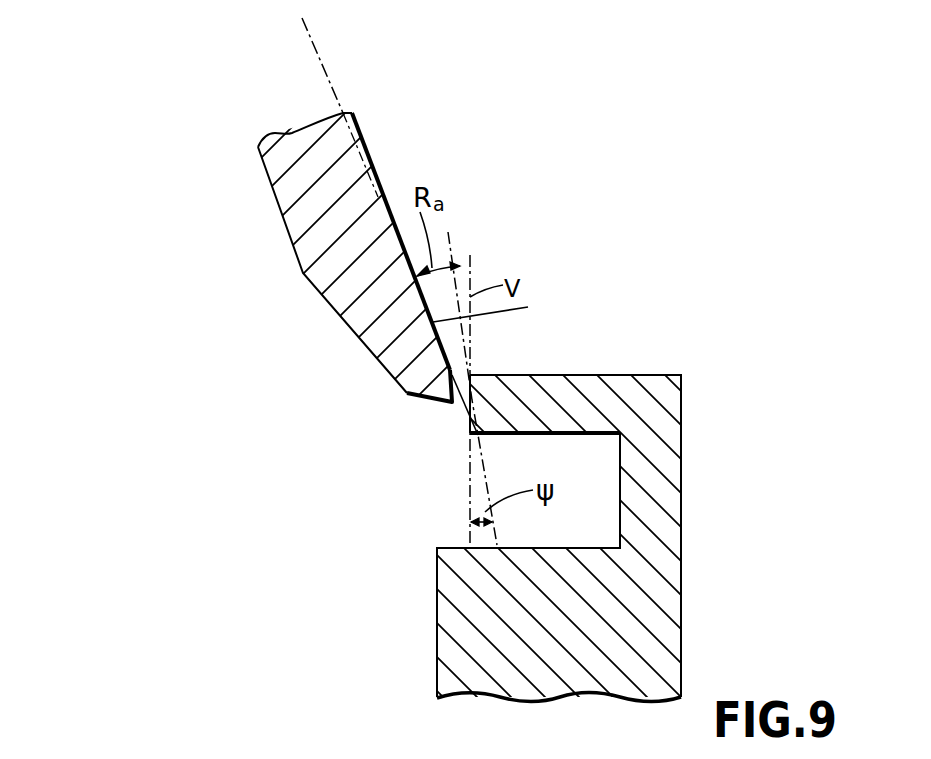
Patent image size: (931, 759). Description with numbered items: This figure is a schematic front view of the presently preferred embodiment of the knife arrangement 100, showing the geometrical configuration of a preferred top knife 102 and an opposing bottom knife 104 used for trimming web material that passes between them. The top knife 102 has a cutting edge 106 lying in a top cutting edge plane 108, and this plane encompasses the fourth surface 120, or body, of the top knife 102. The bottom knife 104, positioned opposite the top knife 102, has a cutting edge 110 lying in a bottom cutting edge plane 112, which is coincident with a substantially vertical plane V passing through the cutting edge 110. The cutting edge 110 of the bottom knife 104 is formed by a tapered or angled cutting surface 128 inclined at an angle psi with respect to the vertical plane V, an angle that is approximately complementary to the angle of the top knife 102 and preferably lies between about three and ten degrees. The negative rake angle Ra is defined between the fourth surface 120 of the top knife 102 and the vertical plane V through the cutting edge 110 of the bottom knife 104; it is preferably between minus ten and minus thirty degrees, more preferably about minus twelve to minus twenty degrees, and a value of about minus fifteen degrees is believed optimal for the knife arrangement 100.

The knife arrangement 100 is at (142, 335).
The top knife 102 is at (278, 203).
The bottom knife 104 is at (682, 640).
The cutting edge 106 is at (455, 403).
The top cutting edge plane 108 is at (357, 117).
The cutting edge 110 is at (470, 377).
The bottom cutting edge plane 112 is at (450, 246).
The fourth surface 120 is at (505, 304).
The cutting surface 128 is at (468, 428).